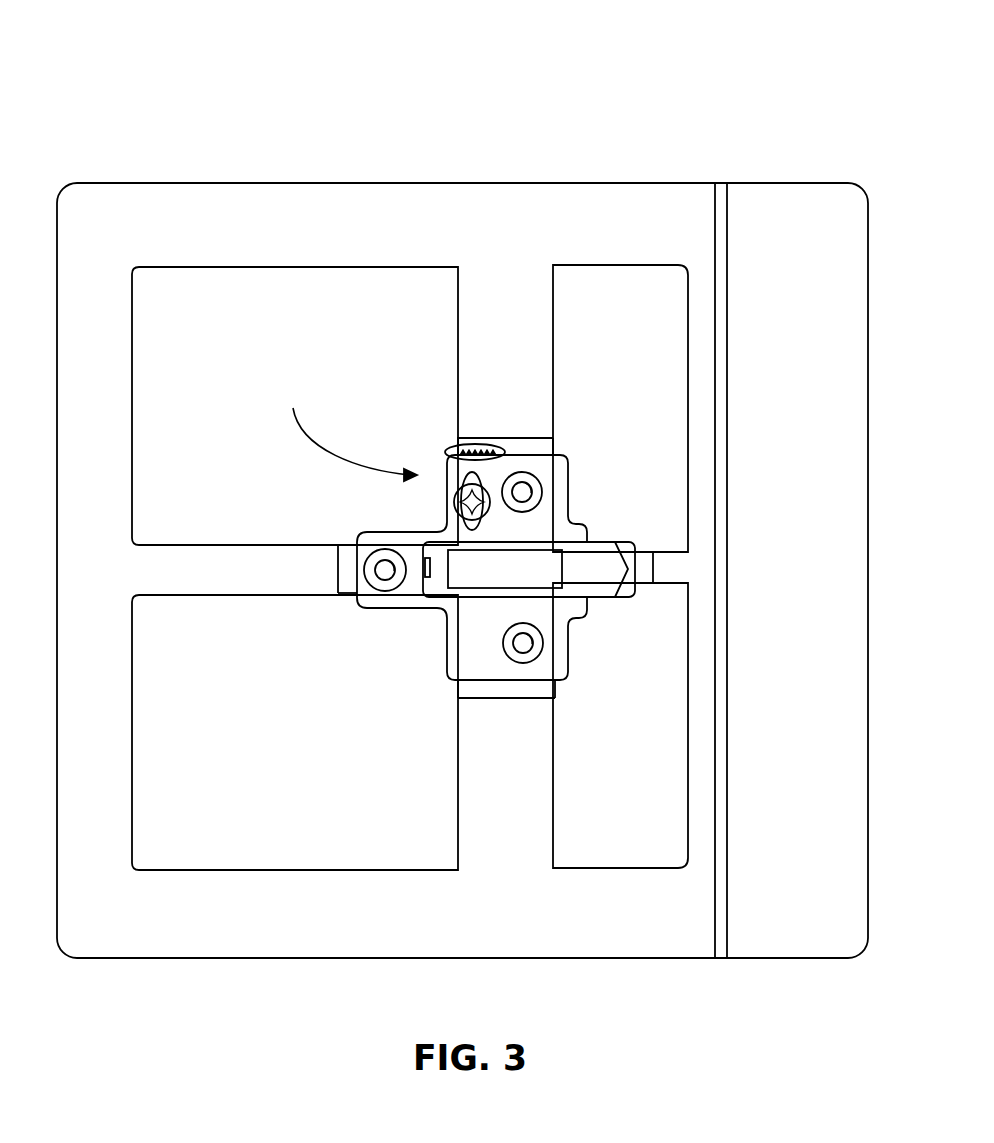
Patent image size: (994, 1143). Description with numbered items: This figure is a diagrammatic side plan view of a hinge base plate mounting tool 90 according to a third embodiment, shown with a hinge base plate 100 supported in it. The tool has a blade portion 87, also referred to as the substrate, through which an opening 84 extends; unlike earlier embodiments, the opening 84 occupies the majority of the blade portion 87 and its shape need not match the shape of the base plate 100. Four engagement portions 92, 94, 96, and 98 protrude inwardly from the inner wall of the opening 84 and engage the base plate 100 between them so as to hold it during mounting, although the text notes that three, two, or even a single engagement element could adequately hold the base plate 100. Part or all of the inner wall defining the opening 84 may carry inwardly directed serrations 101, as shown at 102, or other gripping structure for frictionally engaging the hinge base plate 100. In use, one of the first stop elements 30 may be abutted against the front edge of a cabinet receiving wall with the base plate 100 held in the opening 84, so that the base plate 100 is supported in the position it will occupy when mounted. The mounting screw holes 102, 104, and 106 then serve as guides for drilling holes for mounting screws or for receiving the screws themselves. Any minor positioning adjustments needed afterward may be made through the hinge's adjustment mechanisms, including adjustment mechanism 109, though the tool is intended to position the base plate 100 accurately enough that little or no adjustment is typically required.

The first stop element 30 is at (718, 338).
The opening 84 is at (320, 353).
The blade portion 87 is at (126, 236).
The hinge base plate mounting tool 90 is at (637, 90).
The engagement portion 92 is at (535, 688).
The engagement portion 94 is at (645, 567).
The engagement portion 96 is at (532, 448).
The engagement portion 98 is at (347, 573).
The hinge base plate 100 is at (475, 573).
The serrations 101 is at (478, 452).
The mounting screw hole 102 is at (445, 456).
The mounting screw hole 104 is at (532, 490).
The mounting screw hole 106 is at (392, 562).
The adjustment mechanism 109 is at (385, 457).